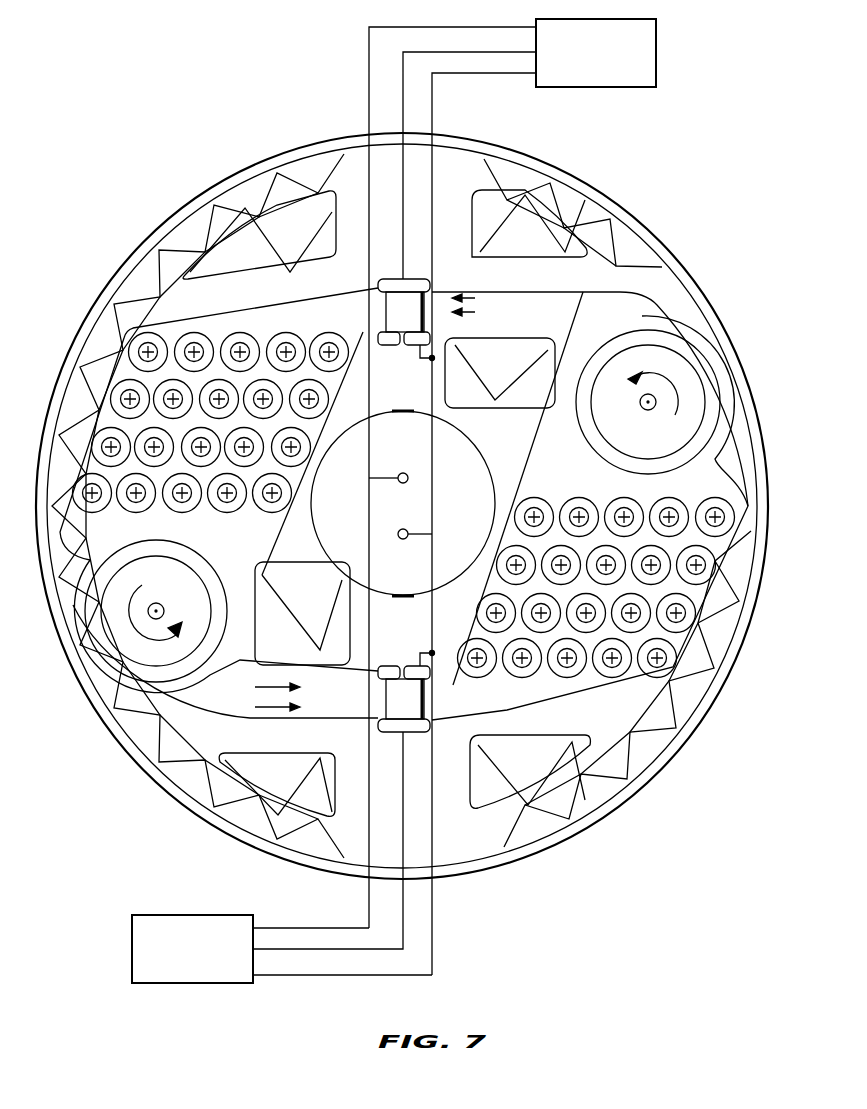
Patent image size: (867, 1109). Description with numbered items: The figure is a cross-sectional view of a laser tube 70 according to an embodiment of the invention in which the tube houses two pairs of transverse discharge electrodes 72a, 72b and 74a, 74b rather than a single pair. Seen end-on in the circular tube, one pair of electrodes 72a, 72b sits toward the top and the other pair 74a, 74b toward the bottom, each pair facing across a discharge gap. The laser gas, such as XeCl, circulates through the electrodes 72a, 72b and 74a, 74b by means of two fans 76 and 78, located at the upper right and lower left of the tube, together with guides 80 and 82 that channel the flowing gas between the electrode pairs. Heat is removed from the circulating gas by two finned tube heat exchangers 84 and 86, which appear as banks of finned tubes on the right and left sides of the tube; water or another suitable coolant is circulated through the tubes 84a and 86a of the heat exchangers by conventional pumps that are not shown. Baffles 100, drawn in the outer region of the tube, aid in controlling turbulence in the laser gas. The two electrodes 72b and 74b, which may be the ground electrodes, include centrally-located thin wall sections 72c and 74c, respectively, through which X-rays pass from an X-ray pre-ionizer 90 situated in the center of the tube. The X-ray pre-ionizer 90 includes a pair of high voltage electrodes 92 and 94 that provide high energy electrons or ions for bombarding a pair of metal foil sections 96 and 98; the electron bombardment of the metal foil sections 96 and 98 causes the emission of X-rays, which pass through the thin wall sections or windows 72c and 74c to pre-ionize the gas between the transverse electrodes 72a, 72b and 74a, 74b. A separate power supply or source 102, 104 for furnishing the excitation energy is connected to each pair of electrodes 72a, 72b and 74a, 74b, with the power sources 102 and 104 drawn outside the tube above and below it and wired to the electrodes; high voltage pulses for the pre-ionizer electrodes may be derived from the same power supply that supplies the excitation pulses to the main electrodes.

The laser tube 70 is at (682, 262).
The transverse discharge electrode 72a is at (432, 285).
The transverse discharge electrode 72b is at (378, 345).
The thin wall section 72c is at (395, 336).
The transverse discharge electrode 74a is at (432, 727).
The transverse discharge electrode 74b is at (400, 688).
The thin wall section 74c is at (380, 678).
The fan 76 is at (700, 400).
The fan 78 is at (190, 655).
The guide 80 is at (620, 300).
The guide 82 is at (485, 335).
The finned tube heat exchanger 84 is at (705, 500).
The tubes 84a is at (582, 500).
The finned tube heat exchanger 86 is at (240, 332).
The tubes 86a is at (270, 348).
The X-ray pre-ionizer 90 is at (330, 568).
The high voltage electrode 92 is at (410, 478).
The high voltage electrode 94 is at (433, 534).
The metal foil section 96 is at (408, 420).
The metal foil section 98 is at (400, 592).
The baffles 100 is at (243, 205).
The power source 102 is at (658, 50).
The power source 104 is at (180, 912).